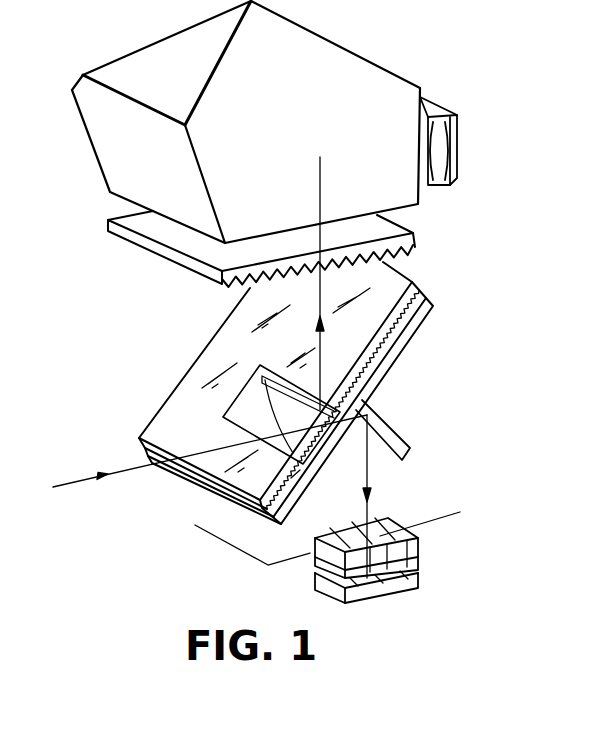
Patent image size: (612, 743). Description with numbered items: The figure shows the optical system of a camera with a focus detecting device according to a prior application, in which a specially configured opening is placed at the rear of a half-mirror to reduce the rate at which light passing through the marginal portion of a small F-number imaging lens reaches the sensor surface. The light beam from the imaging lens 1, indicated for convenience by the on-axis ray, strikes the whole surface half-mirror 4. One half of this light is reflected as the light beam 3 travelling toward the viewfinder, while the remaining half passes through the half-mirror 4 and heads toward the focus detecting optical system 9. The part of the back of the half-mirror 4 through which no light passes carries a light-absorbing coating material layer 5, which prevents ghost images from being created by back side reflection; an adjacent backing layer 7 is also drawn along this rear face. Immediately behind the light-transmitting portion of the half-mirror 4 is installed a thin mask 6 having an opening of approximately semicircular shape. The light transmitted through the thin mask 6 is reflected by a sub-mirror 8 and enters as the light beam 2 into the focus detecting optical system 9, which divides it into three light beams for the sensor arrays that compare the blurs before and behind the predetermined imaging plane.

The light beam from the imaging lens 1 is at (68, 484).
The light beam 2 is at (368, 478).
The light beam travelling toward the viewfinder 3 is at (321, 191).
The whole surface half-mirror 4 is at (184, 379).
The light-absorbing coating material layer 5 is at (396, 337).
The thin mask 6 is at (356, 405).
The backing plate 7 is at (436, 304).
The sub-mirror 8 is at (399, 441).
The focus detecting optical system 9 is at (420, 543).